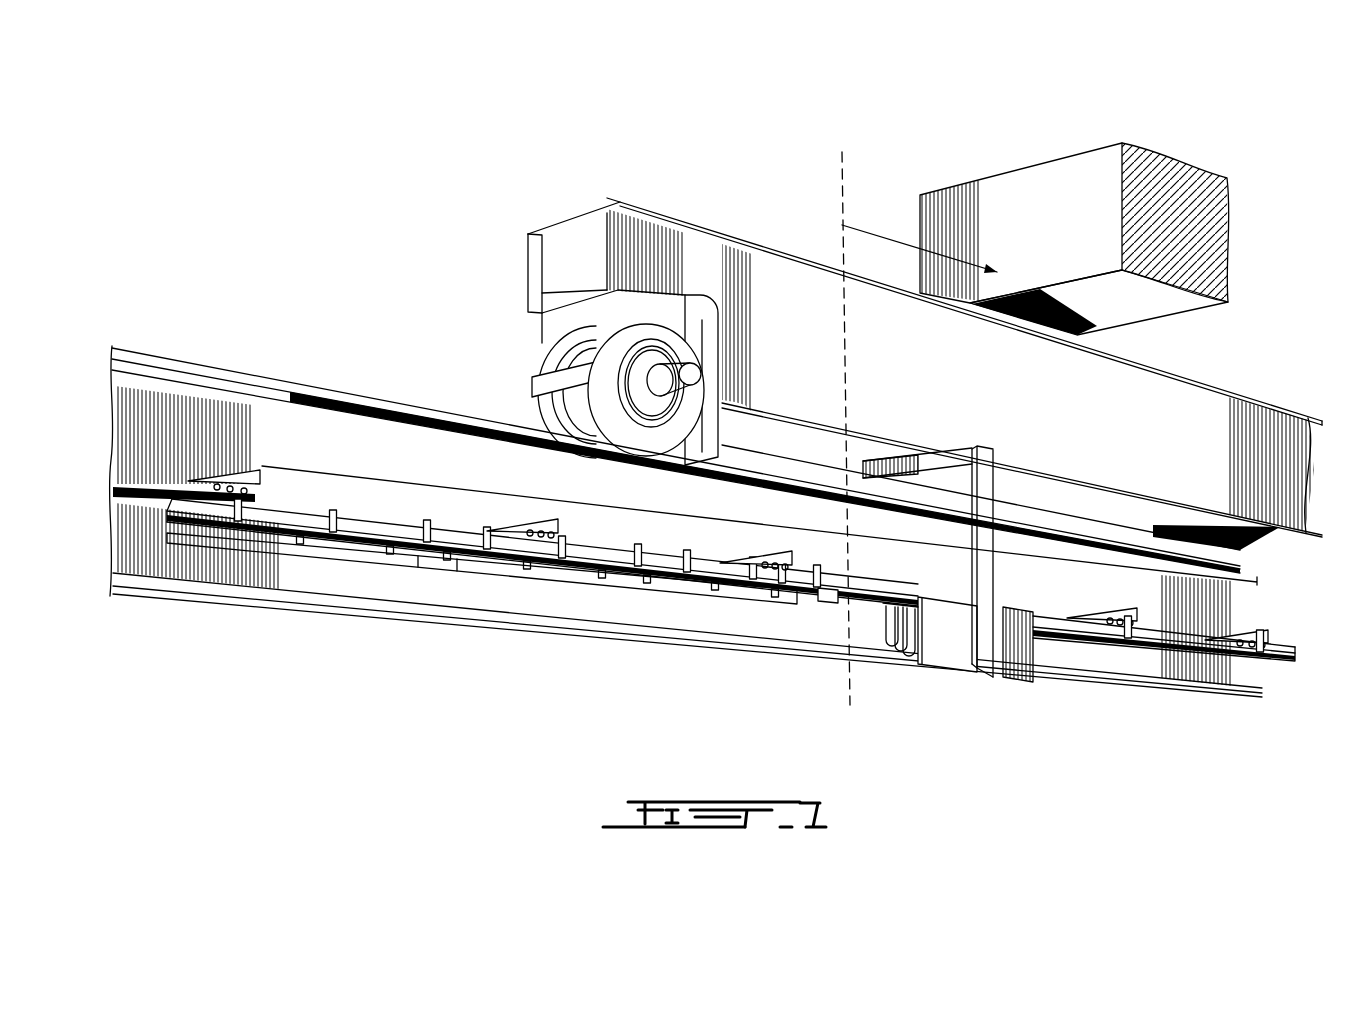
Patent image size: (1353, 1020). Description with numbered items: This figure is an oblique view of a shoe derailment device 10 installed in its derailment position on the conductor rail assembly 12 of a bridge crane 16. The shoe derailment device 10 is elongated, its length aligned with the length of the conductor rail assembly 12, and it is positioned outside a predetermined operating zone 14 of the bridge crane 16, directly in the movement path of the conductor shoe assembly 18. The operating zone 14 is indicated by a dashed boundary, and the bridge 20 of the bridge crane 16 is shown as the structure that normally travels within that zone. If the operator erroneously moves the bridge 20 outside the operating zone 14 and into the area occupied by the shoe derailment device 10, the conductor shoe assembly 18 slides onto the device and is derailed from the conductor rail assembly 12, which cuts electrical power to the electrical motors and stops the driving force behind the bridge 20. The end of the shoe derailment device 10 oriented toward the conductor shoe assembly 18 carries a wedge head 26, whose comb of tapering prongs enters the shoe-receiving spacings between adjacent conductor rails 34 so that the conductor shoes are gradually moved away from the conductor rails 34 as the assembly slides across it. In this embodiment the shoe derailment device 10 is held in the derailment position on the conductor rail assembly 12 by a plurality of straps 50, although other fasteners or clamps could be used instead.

The shoe derailment device 10 is at (331, 539).
The conductor rail assembly 12 is at (150, 484).
The operating zone 14 is at (878, 226).
The bridge crane 16 is at (970, 712).
The conductor shoe assembly 18 is at (882, 654).
The bridge 20 is at (1076, 192).
The wedge head 26 is at (826, 606).
The conductor rails 34 is at (1148, 636).
The straps 50 is at (489, 538).